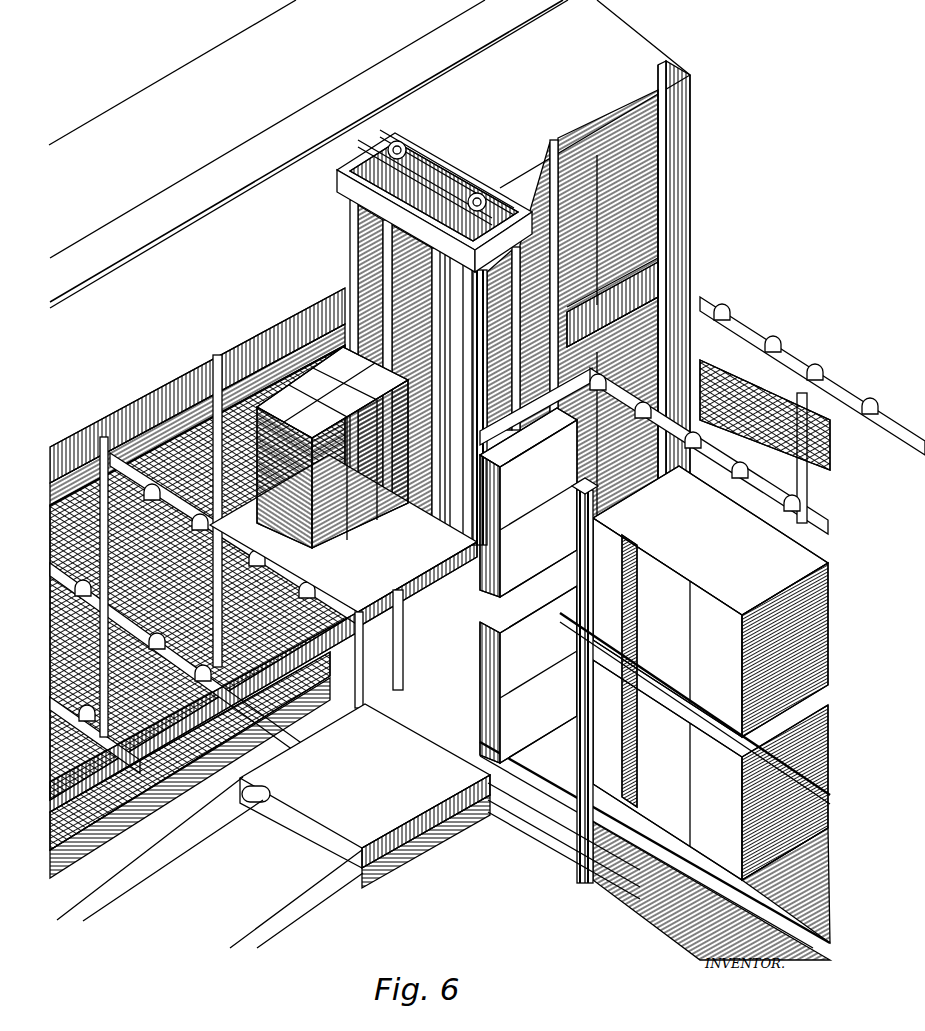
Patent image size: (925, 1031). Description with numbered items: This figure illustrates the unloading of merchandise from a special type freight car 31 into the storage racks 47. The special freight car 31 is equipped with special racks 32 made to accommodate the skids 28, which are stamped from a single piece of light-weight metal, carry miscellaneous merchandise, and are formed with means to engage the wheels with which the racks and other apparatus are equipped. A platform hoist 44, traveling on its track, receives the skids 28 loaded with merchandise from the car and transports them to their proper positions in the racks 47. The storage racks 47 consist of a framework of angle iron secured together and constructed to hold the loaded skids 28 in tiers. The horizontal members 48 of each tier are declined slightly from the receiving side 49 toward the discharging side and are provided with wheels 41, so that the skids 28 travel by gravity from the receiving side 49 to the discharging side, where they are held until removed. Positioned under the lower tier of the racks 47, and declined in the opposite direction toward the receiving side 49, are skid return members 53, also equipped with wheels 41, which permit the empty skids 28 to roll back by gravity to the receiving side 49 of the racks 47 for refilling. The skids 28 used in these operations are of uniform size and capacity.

The skid 28 is at (318, 555).
The special freight car 31 is at (660, 63).
The special rack 32 is at (660, 263).
The wheel 41 is at (742, 586).
The platform hoist 44 is at (385, 814).
The storage rack 47 is at (585, 882).
The horizontal member 48 is at (670, 547).
The receiving side 49 is at (493, 806).
The skid return member 53 is at (542, 828).